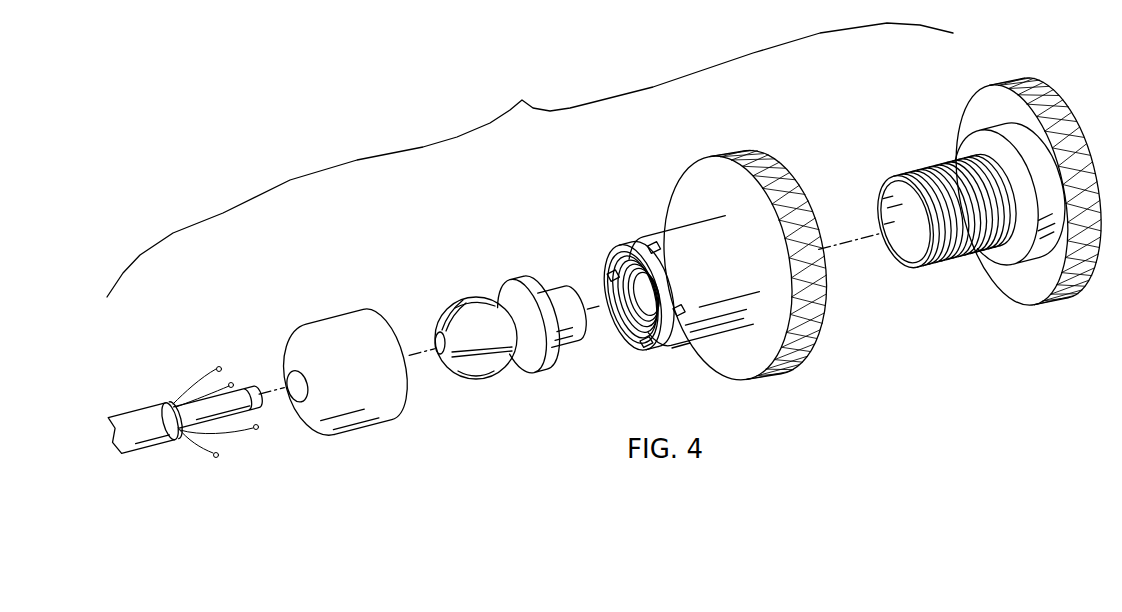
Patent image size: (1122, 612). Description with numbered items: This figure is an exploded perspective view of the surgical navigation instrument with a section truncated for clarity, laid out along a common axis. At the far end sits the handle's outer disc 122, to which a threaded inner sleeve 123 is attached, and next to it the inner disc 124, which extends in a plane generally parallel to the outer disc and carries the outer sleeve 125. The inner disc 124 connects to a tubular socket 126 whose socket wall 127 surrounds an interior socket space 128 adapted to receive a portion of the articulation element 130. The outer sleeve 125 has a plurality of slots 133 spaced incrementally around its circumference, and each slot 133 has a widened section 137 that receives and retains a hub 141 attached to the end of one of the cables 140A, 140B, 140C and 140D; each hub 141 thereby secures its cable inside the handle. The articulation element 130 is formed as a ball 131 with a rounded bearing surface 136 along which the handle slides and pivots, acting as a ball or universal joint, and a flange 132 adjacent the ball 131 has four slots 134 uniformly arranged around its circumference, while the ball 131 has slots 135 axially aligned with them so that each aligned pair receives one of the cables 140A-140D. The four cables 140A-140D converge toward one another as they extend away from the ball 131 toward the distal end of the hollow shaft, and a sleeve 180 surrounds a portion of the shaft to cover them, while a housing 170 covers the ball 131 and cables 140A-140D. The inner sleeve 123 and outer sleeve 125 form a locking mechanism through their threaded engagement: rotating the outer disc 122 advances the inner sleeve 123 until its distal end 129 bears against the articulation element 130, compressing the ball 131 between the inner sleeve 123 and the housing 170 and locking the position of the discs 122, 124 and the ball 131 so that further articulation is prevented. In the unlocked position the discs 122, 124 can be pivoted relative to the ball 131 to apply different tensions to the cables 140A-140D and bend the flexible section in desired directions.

The outer disc 122 is at (993, 83).
The inner sleeve 123 is at (922, 166).
The inner disc 124 is at (707, 158).
The outer sleeve 125 is at (705, 243).
The tubular socket 126 is at (718, 327).
The socket wall 127 is at (625, 245).
The socket space 128 is at (621, 331).
The distal end of inner sleeve 129 is at (913, 272).
The articulation element 130 is at (485, 342).
The ball 131 is at (470, 320).
The flange 132 is at (540, 374).
The slots 133 is at (602, 277).
The slots 134 is at (543, 348).
The slots 135 is at (443, 322).
The bearing surface 136 is at (481, 382).
The widened section 137 is at (678, 347).
The cable 140A is at (193, 372).
The cable 140B is at (203, 452).
The cable 140C is at (245, 437).
The cable 140D is at (227, 386).
The hub 141 is at (218, 366).
The housing 170 is at (330, 319).
The sleeve 180 is at (123, 413).